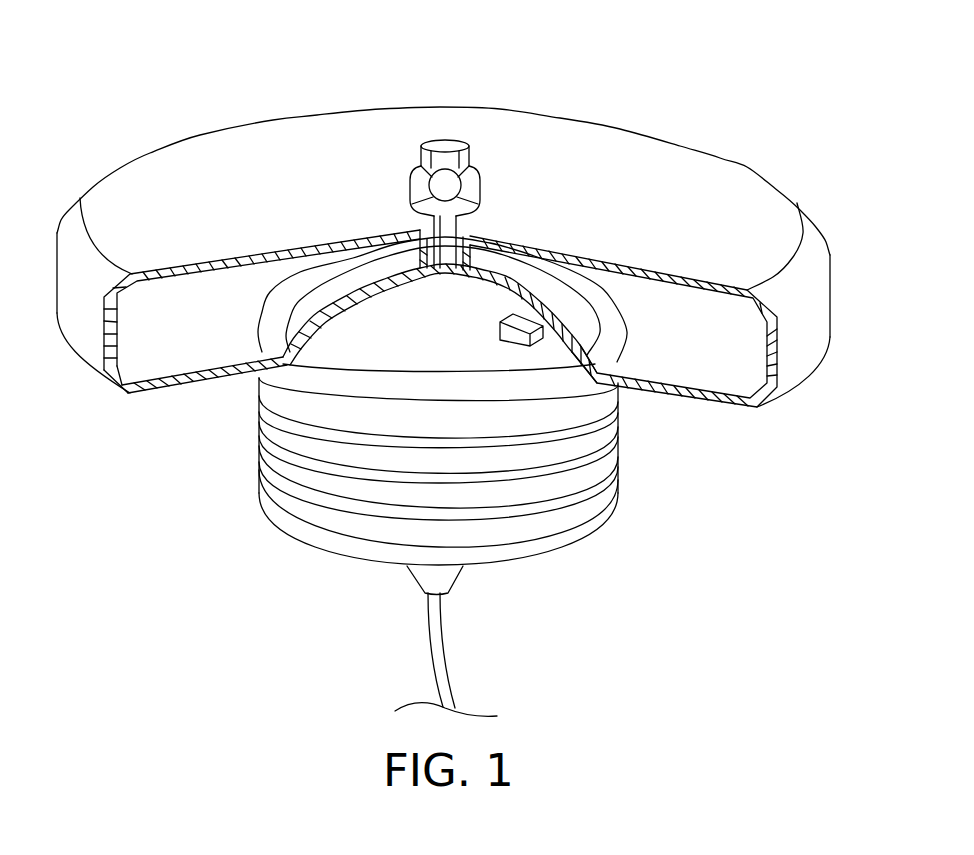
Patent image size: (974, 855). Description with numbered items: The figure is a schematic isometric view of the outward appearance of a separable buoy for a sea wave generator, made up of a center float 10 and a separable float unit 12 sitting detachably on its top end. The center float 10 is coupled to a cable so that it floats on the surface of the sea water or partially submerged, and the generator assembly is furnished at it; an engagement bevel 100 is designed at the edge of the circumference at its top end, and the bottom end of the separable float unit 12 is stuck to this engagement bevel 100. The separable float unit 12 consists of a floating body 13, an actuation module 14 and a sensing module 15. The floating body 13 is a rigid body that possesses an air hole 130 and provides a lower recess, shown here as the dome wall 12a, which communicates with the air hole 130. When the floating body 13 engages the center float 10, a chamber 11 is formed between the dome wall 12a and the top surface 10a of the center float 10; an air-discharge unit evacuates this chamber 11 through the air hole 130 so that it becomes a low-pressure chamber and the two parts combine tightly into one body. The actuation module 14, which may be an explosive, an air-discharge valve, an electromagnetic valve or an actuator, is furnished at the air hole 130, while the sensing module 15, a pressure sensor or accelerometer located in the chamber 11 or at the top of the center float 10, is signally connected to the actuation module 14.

The center float 10 is at (580, 525).
The top surface 10a is at (463, 325).
The engagement bevel 100 is at (470, 383).
The chamber 11 is at (407, 343).
The separable float unit 12 is at (840, 117).
The dome wall 12a is at (362, 345).
The floating body 13 is at (813, 325).
The air hole 130 is at (440, 231).
The actuation module 14 is at (445, 185).
The sensing module 15 is at (523, 322).